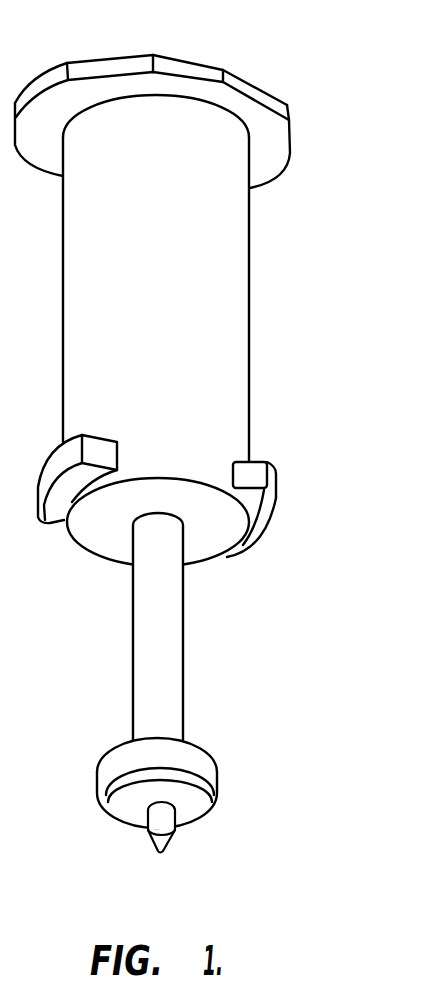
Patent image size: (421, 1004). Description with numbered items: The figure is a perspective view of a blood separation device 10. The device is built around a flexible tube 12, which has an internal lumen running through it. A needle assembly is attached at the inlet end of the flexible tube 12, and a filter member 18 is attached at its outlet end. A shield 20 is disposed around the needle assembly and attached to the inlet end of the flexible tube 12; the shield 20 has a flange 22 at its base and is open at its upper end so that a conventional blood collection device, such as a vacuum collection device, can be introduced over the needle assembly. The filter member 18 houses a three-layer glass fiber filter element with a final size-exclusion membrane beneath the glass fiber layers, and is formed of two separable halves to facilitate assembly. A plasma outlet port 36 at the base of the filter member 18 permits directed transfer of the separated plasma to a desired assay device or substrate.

The blood separation device 10 is at (205, 460).
The shield 20 is at (220, 277).
The flange 22 is at (263, 508).
The flexible tube 12 is at (165, 645).
The filter member 18 is at (203, 770).
The plasma outlet port 36 is at (147, 825).